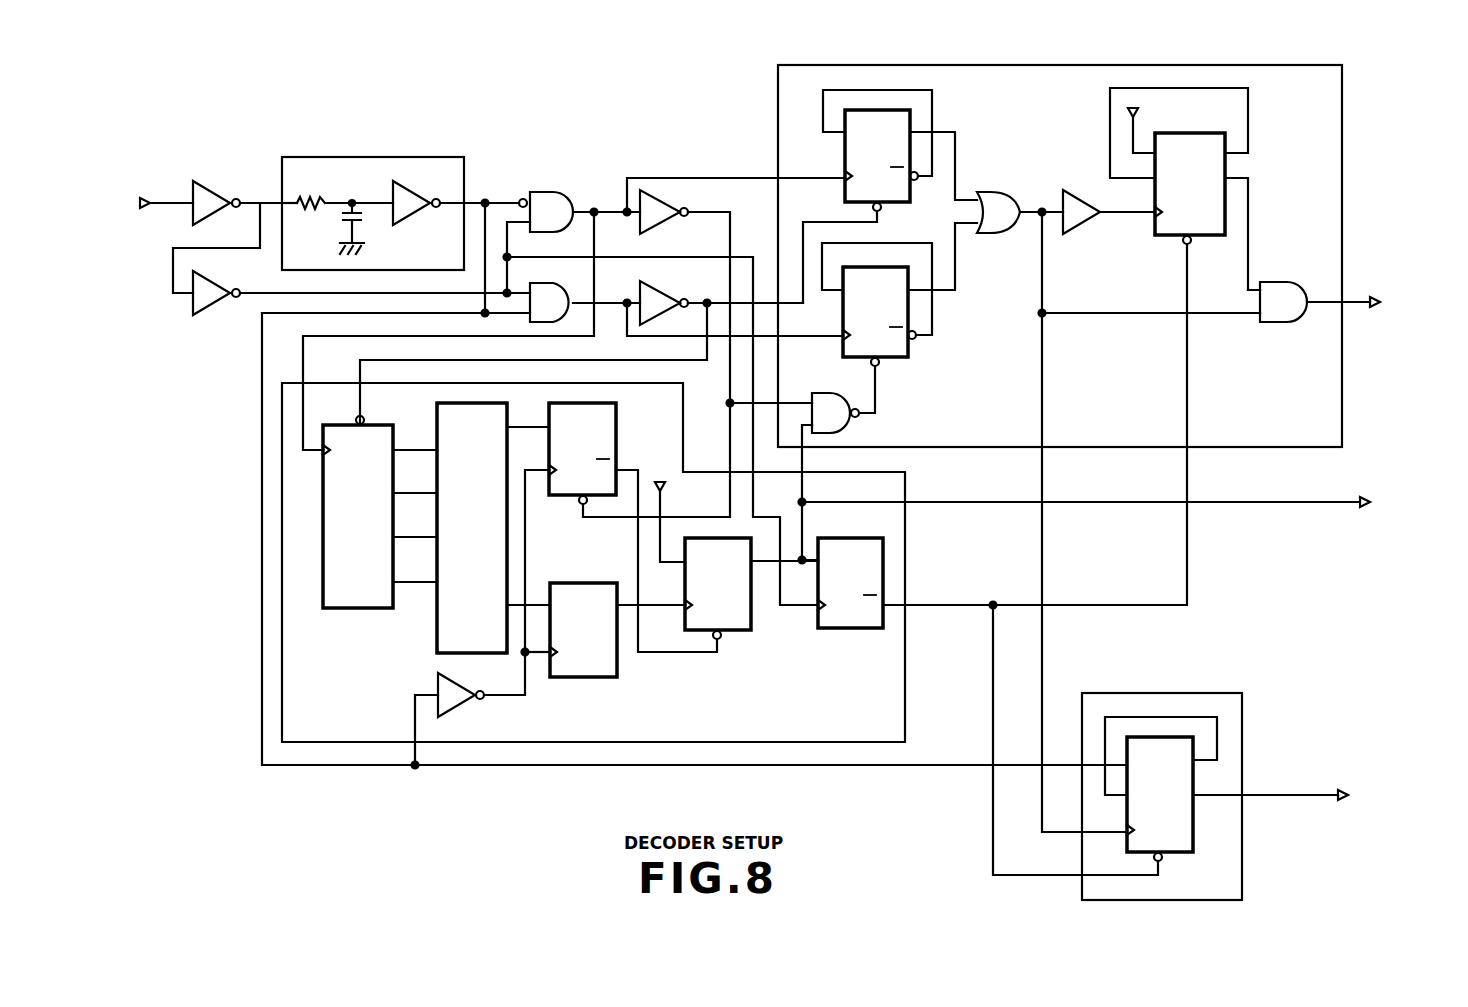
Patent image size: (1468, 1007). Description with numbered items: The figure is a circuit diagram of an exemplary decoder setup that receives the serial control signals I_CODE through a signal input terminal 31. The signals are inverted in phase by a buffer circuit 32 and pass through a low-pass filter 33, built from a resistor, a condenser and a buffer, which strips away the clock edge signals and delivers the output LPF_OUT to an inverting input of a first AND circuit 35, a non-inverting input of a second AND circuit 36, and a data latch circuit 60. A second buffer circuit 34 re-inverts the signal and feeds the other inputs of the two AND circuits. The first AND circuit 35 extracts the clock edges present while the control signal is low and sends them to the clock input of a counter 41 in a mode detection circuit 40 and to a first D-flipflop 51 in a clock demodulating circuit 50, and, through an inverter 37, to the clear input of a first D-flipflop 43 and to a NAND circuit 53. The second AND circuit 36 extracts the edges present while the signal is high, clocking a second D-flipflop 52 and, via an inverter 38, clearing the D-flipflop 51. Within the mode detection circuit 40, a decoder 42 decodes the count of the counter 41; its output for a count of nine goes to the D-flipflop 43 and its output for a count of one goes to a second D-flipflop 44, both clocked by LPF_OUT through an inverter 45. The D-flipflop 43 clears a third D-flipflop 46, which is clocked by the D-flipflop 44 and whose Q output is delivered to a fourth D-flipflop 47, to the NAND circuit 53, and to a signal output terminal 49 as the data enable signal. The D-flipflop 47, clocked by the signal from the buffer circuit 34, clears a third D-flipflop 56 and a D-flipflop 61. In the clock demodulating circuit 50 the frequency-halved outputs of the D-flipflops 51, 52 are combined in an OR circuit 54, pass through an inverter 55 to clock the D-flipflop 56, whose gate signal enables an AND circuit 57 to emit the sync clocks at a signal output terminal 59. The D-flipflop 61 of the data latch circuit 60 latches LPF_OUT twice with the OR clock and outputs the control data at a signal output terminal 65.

The signal input terminal 31 is at (140, 211).
The buffer circuit 32 is at (216, 189).
The low-pass filter 33 is at (382, 156).
The buffer circuit 34 is at (213, 313).
The first AND circuit 35 is at (547, 192).
The second AND circuit 36 is at (564, 280).
The inverter 37 is at (672, 222).
The inverter 38 is at (662, 286).
The mode detection circuit 40 is at (905, 537).
The counter 41 is at (343, 608).
The decoder 42 is at (436, 629).
The first D-flipflop 43 is at (572, 501).
The second D-flipflop 44 is at (590, 680).
The inverter 45 is at (462, 704).
The third D-flipflop 46 is at (736, 638).
The fourth D-flipflop 47 is at (848, 630).
The signal output terminal 49 is at (1366, 509).
The clock demodulating circuit 50 is at (1121, 65).
The first D-flipflop 51 is at (845, 150).
The second D-flipflop 52 is at (893, 360).
The NAND circuit 53 is at (820, 393).
The OR circuit 54 is at (998, 194).
The inverter 55 is at (1081, 231).
The third D-flipflop 56 is at (1175, 244).
The AND circuit 57 is at (1275, 323).
The signal output terminal 59 is at (1382, 308).
The data latch circuit 60 is at (1164, 693).
The D-flipflop 61 is at (1184, 854).
The signal output terminal 65 is at (1336, 790).